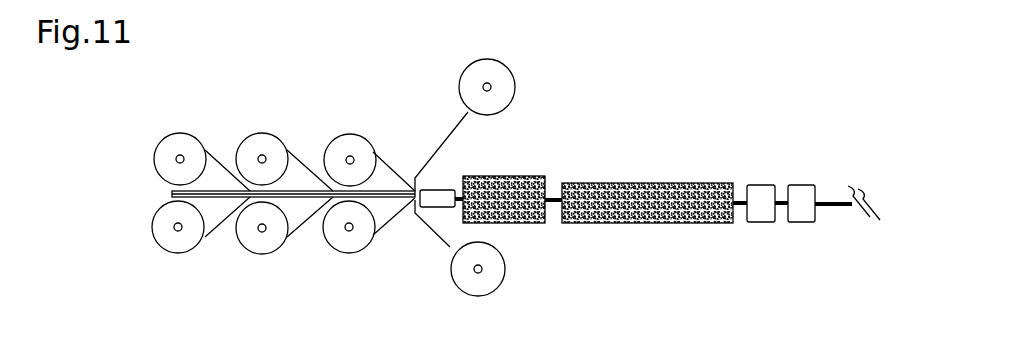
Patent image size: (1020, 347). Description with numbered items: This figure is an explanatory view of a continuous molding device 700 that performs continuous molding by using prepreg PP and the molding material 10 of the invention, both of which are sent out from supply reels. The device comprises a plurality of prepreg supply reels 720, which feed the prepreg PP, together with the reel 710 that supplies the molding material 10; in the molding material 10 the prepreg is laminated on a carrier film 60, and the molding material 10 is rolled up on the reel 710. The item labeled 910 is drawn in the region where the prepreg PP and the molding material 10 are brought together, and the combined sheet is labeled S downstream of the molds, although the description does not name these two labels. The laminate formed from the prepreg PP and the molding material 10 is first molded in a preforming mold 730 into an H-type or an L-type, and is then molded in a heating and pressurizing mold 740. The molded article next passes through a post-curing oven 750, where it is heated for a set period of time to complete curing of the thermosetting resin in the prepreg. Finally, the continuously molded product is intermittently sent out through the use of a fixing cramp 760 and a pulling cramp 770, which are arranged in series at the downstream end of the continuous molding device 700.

The continuous molding device 700 is at (568, 118).
The reel 710 is at (356, 147).
The prepreg supply reel 720 is at (257, 143).
The preforming mold 730 is at (438, 193).
The heating and pressurizing mold 740 is at (507, 183).
The post-curing oven 750 is at (653, 184).
The fixing cramp 760 is at (758, 202).
The pulling cramp 770 is at (802, 200).
The pressing unit 910 is at (307, 132).
The molding material 10 is at (402, 165).
The carrier film 60 is at (458, 108).
The prepreg PP is at (222, 172).
The laminated sheet S is at (740, 188).